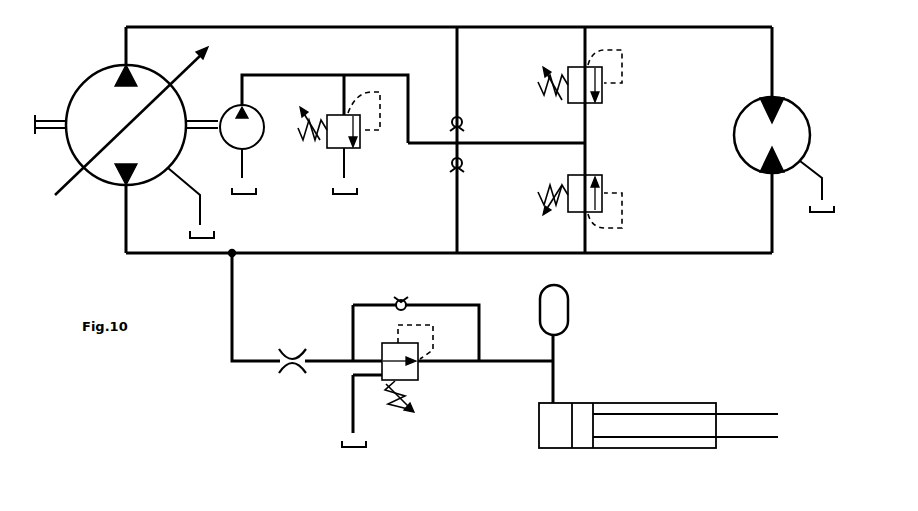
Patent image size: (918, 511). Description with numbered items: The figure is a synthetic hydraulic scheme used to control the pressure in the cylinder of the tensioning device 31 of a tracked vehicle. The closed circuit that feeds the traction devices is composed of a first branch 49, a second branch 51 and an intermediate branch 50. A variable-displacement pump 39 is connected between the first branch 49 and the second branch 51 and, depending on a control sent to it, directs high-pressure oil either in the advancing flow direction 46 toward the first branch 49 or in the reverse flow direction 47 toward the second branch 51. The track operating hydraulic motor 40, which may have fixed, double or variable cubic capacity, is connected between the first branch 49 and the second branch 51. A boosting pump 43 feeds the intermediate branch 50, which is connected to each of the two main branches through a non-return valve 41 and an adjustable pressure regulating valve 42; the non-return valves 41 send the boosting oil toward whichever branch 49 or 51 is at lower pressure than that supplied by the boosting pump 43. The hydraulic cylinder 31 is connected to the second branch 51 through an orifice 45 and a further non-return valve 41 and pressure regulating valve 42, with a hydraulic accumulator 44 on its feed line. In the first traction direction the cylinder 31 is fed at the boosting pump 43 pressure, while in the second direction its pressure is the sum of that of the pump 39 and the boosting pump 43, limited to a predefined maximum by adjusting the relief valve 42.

The cylinder of the tensioning device 31 is at (636, 402).
The variable-displacement pump 39 is at (98, 83).
The track operating hydraulic motor 40 is at (782, 108).
The non-return valve 41 is at (450, 166).
The adjustable pressure regulating valve 42 is at (332, 148).
The boosting pump 43 is at (244, 135).
The hydraulic accumulator 44 is at (568, 320).
The orifice 45 is at (290, 351).
The oil flow direction in the advancing direction 46 is at (118, 65).
The oil flow direction in the reverse direction 47 is at (118, 185).
The first branch 49 is at (513, 40).
The intermediate branch 50 is at (503, 142).
The second branch 51 is at (496, 251).